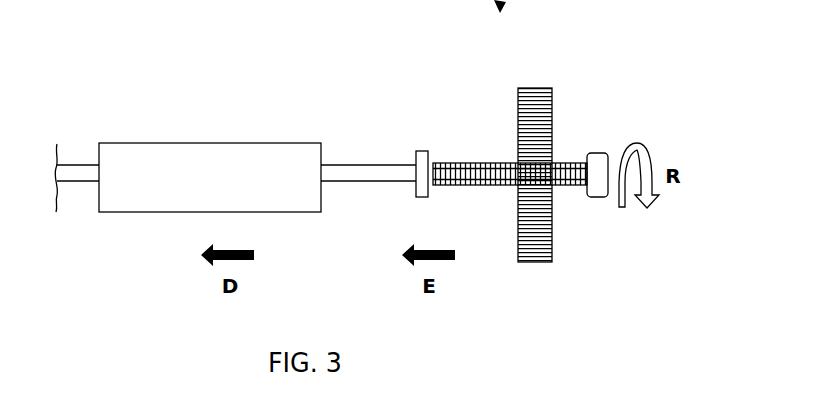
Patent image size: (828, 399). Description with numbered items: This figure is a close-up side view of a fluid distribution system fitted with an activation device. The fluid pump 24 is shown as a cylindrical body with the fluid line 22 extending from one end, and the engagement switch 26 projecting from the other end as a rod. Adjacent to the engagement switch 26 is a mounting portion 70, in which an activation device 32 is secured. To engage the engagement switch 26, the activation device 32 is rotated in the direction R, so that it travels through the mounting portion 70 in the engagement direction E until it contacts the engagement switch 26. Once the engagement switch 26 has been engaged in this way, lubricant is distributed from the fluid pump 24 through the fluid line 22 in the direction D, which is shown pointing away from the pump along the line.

The fluid line 22 is at (74, 175).
The fluid pump 24 is at (212, 158).
The engagement switch 26 is at (353, 177).
The activation device 32 is at (492, 190).
The mounting portion 70 is at (537, 112).